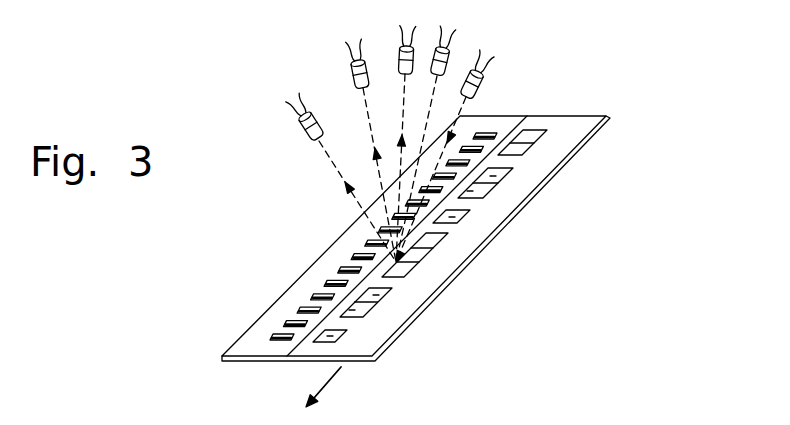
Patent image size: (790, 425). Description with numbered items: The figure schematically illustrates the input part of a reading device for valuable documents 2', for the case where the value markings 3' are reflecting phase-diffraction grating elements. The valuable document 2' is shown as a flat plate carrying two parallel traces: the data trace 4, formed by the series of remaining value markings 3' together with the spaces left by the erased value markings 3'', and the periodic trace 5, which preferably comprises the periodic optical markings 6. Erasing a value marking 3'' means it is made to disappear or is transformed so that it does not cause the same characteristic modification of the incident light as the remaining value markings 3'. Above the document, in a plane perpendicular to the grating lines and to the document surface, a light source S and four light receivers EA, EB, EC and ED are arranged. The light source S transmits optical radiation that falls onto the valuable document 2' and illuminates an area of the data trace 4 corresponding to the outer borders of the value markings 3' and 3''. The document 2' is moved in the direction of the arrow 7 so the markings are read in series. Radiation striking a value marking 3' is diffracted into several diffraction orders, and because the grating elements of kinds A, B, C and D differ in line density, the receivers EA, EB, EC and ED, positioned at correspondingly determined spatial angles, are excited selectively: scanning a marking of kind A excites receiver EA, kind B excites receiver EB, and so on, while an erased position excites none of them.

The valuable document 2' is at (427, 238).
The remaining value markings 3' is at (394, 256).
The erased value markings 3'' is at (339, 275).
The data trace 4 is at (536, 134).
The periodic trace 5 is at (488, 135).
The periodic optical markings 6 is at (299, 309).
The arrow 7 is at (336, 375).
The light source S is at (484, 82).
The light receiver EA is at (302, 122).
The light receiver EB is at (355, 76).
The light receiver EC is at (401, 53).
The light receiver ED is at (448, 58).